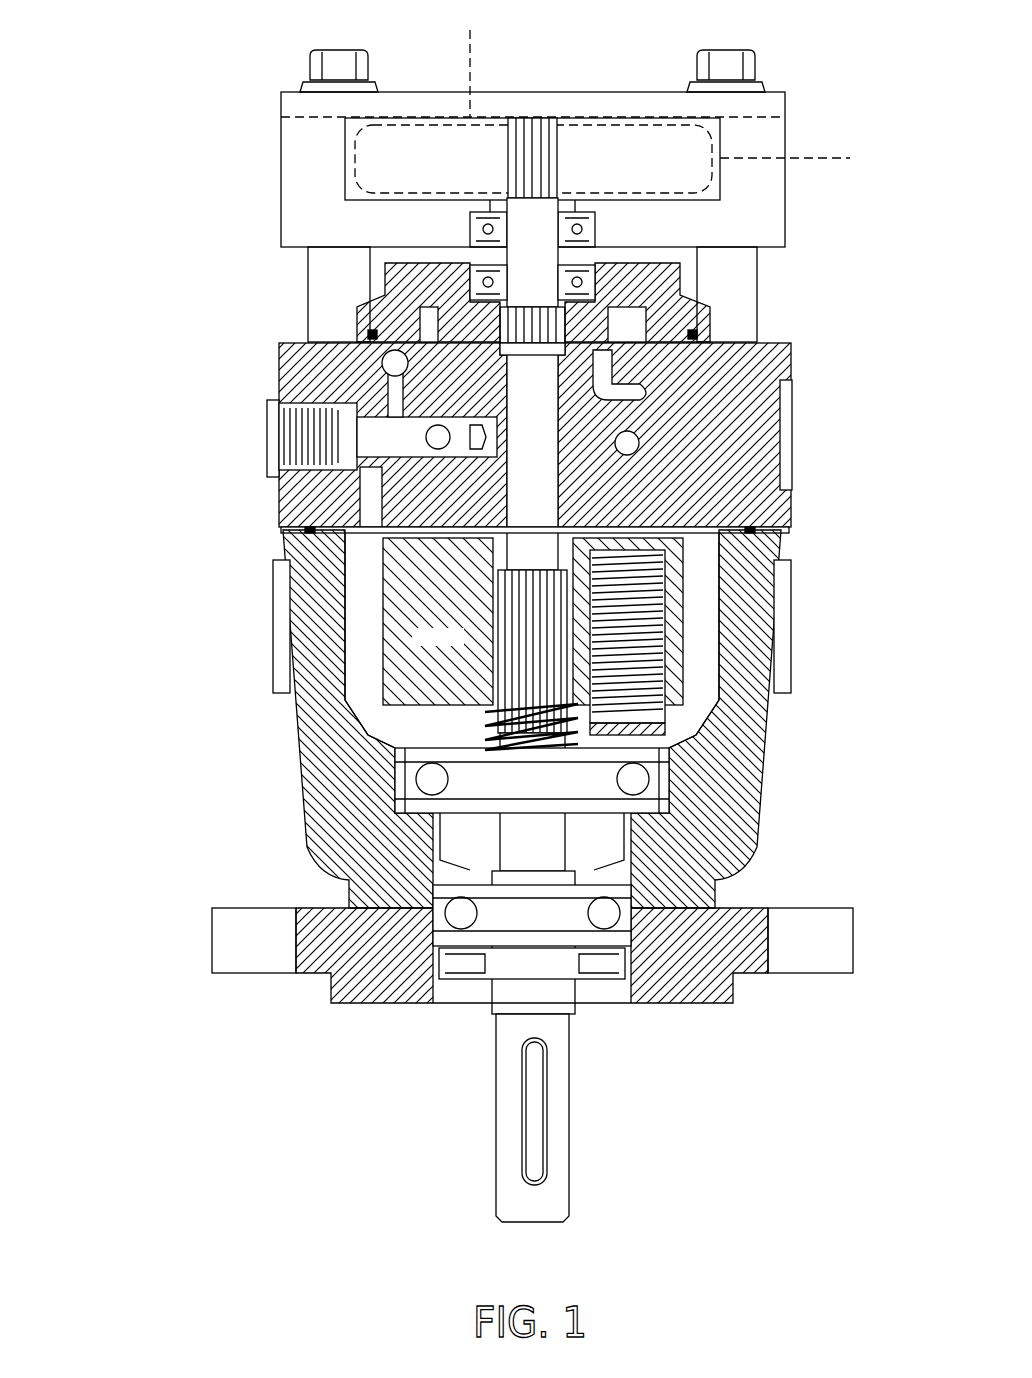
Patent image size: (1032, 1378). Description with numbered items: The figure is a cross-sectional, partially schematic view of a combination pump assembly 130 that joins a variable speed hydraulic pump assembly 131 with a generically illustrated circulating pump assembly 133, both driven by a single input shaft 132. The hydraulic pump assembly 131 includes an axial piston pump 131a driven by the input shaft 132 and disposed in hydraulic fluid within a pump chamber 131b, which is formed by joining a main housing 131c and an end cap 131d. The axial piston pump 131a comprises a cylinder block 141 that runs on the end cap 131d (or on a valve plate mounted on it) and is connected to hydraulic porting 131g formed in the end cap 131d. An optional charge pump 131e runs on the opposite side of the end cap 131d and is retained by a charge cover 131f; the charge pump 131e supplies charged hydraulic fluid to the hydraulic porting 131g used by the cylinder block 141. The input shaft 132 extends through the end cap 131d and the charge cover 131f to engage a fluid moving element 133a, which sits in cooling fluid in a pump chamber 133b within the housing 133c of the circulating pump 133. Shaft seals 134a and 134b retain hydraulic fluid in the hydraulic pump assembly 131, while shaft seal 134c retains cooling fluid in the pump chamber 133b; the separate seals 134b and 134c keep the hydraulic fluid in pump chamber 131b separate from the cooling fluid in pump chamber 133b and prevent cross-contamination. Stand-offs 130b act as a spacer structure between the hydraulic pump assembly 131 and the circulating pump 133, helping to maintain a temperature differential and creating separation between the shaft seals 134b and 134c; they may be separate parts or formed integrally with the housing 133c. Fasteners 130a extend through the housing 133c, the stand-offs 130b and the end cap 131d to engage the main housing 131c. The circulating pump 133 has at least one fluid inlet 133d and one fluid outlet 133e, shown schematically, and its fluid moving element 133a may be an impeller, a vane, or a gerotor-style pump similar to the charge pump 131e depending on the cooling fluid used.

The combination pump assembly 130 is at (156, 106).
The fasteners 130a is at (343, 50).
The stand-offs 130b is at (308, 310).
The variable speed hydraulic pump assembly 131 is at (225, 633).
The axial piston pump 131a is at (385, 718).
The pump chamber 131b is at (705, 633).
The main housing 131c is at (740, 770).
The end cap 131d is at (777, 465).
The charge pump 131e is at (340, 283).
The charge cover 131f is at (700, 318).
The hydraulic porting 131g is at (622, 396).
The input shaft 132 is at (572, 1100).
The circulating pump assembly 133 is at (232, 178).
The fluid moving element 133a is at (658, 140).
The pump chamber 133b is at (672, 100).
The housing 133c is at (787, 137).
The fluid inlet 133d is at (472, 50).
The fluid outlet 133e is at (830, 163).
The shaft seal 134a is at (608, 979).
The shaft seal 134b is at (590, 290).
The shaft seal 134c is at (478, 236).
The cylinder block 141 is at (462, 641).